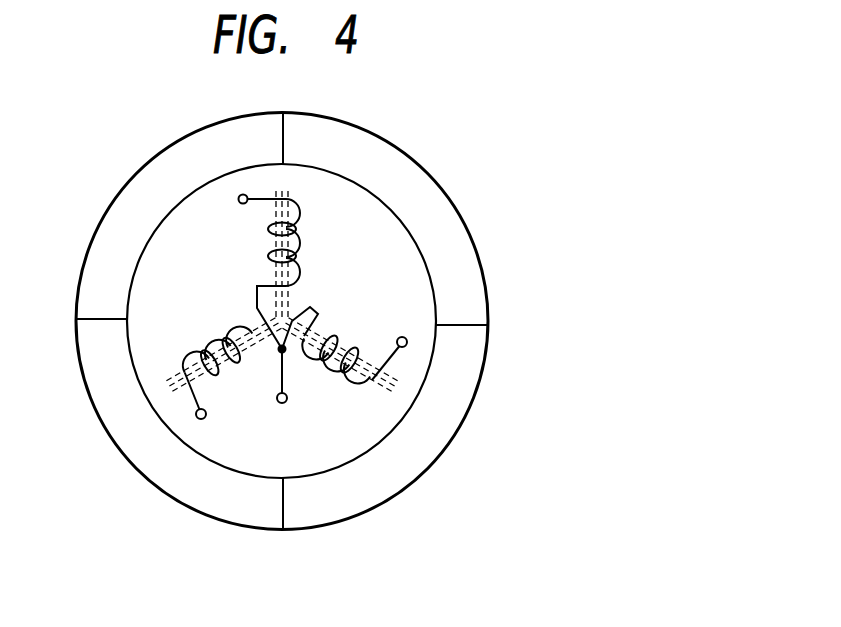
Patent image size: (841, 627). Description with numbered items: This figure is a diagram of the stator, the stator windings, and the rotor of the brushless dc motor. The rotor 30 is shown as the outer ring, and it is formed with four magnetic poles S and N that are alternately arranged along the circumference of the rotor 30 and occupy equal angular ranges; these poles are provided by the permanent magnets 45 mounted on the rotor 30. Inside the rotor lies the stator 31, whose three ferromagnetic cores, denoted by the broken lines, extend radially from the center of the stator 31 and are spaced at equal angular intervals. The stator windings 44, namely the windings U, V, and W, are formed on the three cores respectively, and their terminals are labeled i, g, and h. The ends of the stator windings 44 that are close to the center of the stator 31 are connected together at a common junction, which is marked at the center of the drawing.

The rotor 30 is at (295, 303).
The permanent magnets 45 is at (396, 135).
The stator 31 is at (363, 311).
The stator windings 44 is at (341, 291).